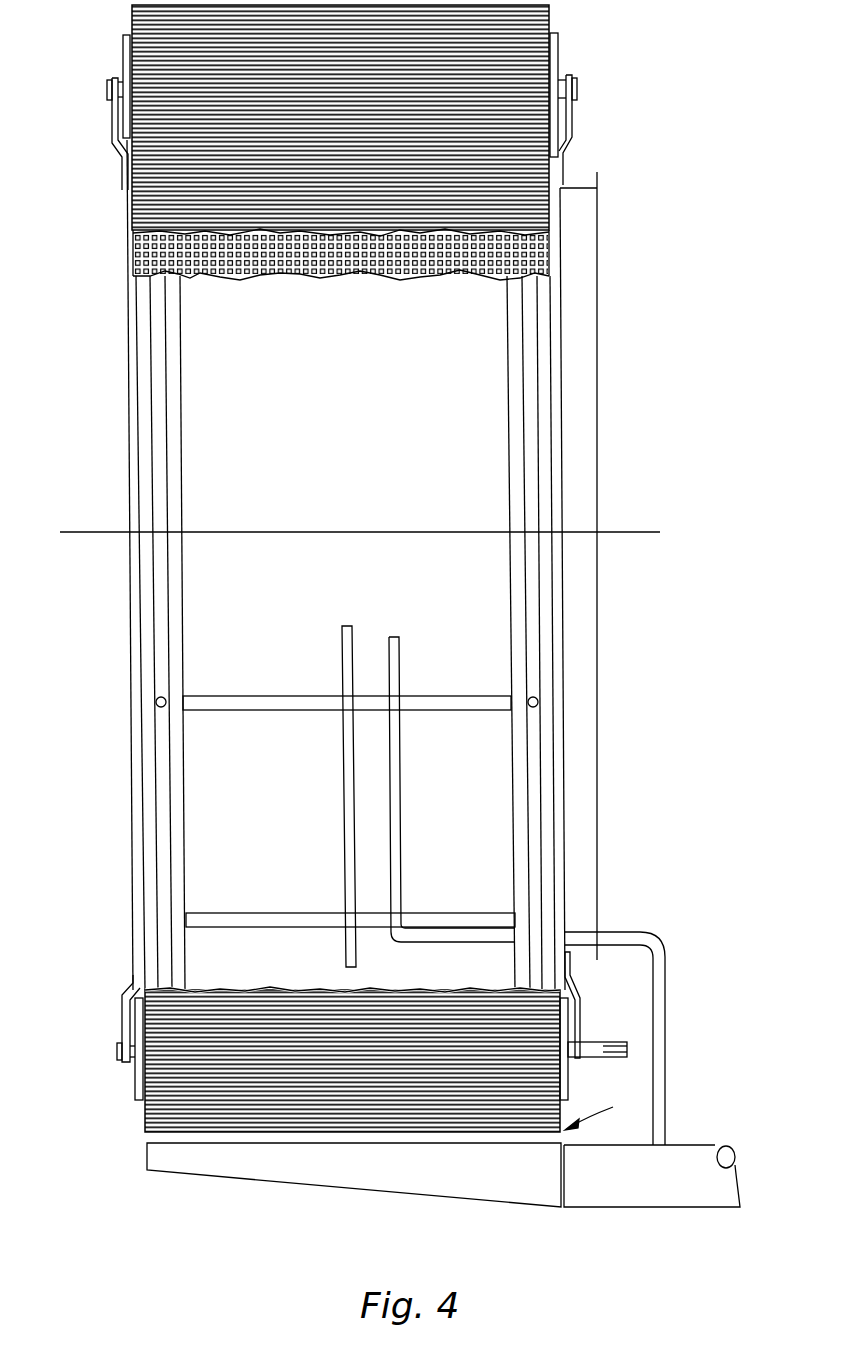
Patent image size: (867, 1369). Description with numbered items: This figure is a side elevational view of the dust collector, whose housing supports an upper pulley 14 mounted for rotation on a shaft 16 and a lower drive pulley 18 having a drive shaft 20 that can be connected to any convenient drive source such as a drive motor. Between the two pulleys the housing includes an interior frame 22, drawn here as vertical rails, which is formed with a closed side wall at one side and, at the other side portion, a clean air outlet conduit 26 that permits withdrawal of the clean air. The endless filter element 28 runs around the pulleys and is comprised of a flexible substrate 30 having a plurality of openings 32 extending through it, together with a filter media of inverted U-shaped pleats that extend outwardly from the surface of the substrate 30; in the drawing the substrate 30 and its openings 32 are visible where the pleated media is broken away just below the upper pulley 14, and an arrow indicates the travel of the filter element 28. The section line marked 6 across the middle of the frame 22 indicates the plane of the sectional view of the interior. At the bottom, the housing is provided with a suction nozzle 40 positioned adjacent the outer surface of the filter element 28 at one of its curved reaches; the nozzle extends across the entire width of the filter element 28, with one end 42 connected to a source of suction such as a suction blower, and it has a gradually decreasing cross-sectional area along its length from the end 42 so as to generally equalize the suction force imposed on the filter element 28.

The section line 6- 6 is at (98, 600).
The upper pulley 14 is at (557, 62).
The shaft 16 is at (577, 90).
The lower drive pulley 18 is at (562, 1020).
The drive shaft 20 is at (605, 1040).
The interior frame 22 is at (555, 455).
The clean air outlet conduit 26 is at (582, 357).
The filter element 28 is at (595, 1104).
The flexible substrate 30 is at (497, 266).
The openings 32 is at (540, 255).
The suction nozzle 40 is at (526, 1190).
The end 42 is at (627, 1187).